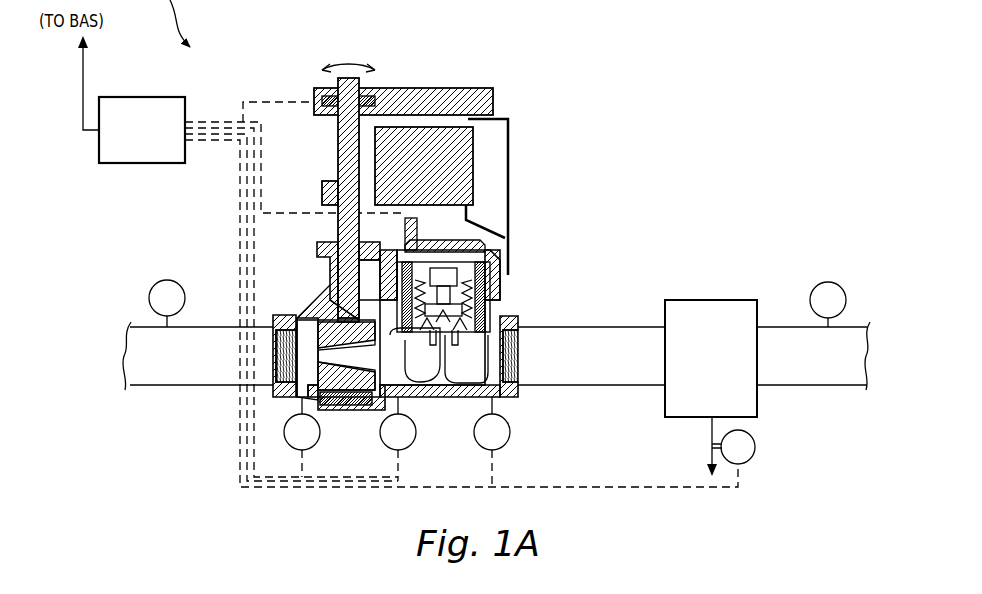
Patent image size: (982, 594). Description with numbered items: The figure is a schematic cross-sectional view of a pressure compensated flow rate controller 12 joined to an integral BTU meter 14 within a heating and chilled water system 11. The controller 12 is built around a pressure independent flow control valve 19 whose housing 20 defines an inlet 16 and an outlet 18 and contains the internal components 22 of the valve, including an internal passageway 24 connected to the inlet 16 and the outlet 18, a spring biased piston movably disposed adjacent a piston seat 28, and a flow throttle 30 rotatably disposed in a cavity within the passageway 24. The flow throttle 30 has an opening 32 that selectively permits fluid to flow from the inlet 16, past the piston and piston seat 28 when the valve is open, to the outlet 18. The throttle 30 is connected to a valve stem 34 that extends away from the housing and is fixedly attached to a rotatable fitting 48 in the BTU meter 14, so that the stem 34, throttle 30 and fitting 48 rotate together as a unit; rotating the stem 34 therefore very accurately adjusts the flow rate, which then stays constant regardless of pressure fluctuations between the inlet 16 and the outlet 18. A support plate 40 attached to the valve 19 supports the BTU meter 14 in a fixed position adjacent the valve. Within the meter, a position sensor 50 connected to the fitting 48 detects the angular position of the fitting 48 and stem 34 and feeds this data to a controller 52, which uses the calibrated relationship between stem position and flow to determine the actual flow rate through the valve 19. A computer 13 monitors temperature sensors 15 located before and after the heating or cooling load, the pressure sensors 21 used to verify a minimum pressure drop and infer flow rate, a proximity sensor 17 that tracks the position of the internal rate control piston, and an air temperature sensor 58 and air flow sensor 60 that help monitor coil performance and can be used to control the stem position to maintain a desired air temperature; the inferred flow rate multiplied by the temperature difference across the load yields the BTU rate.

The heating and chilled water system 11 is at (780, 407).
The pressure compensated flow rate controller 12 is at (198, 460).
The computer 13 is at (160, 108).
The BTU meter 14 is at (493, 100).
The temperature sensors 15 is at (152, 283).
The inlet 16 is at (260, 352).
The proximity sensor 17 is at (415, 224).
The outlet 18 is at (532, 357).
The pressure independent flow control valve 19 is at (540, 311).
The housing 20 is at (512, 400).
The pressure sensors 21 is at (482, 448).
The internal components 22 is at (498, 290).
The internal passageway 24 is at (496, 397).
The piston seat 28 is at (520, 338).
The flow throttle 30 is at (328, 356).
The opening 32 is at (318, 370).
The valve stem 34 is at (335, 228).
The support plate 40 is at (508, 167).
The rotatable fitting 48 is at (398, 95).
The position sensor 50 is at (372, 94).
The controller 52 is at (160, 113).
The air temperature sensor 58 is at (755, 447).
The air flow sensor 60 is at (703, 300).